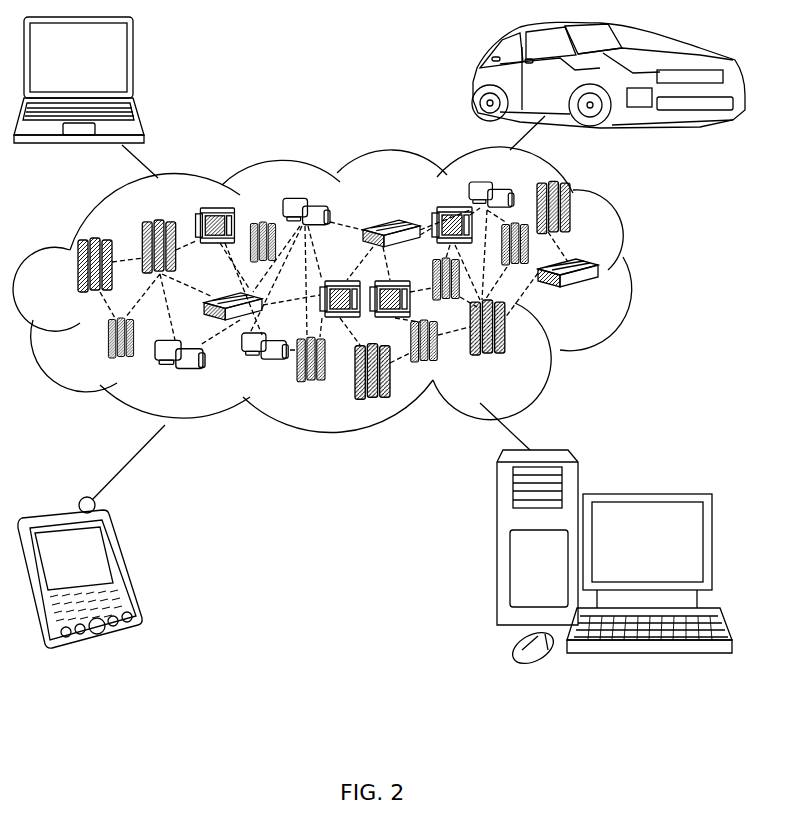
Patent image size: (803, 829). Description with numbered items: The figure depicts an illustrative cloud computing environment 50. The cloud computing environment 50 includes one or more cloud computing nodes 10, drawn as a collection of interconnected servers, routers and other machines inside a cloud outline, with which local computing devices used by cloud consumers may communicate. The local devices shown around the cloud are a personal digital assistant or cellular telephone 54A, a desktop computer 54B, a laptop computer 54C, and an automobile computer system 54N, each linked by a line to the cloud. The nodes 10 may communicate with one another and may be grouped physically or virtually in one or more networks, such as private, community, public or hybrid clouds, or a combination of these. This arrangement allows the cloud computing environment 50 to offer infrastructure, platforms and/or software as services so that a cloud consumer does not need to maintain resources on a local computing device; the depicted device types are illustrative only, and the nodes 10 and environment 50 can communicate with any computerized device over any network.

The cloud computing node 10 is at (603, 296).
The cloud computing environment 50 is at (351, 323).
The personal digital assistant or cellular telephone 54A is at (123, 565).
The desktop computer 54B is at (645, 493).
The laptop computer 54C is at (135, 65).
The automobile computer system 54N is at (478, 76).